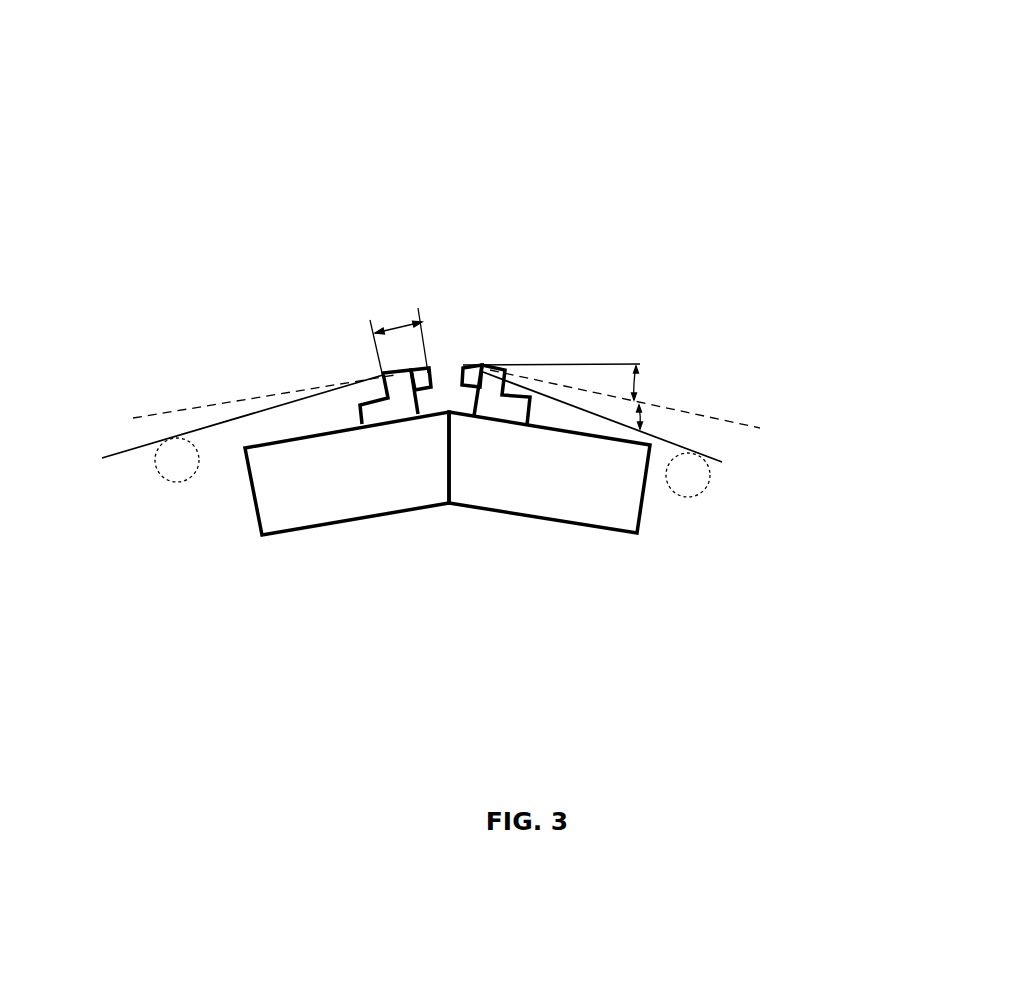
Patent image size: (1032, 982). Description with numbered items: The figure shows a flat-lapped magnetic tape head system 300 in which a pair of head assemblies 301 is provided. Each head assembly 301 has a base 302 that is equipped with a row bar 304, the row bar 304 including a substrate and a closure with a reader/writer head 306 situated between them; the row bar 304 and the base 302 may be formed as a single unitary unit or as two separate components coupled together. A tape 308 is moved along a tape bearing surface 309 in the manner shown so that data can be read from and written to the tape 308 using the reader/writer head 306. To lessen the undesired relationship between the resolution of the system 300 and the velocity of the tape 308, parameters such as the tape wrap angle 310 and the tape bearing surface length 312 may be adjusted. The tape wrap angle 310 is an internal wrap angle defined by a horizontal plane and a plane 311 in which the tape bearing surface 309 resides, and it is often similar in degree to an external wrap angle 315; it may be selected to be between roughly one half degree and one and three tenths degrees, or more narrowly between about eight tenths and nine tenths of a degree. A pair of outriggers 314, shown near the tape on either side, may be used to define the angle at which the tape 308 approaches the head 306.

The flat-lapped magnetic tape head system 300 is at (720, 175).
The head assembly 301 is at (262, 347).
The base 302 is at (253, 500).
The row bar 304 is at (493, 405).
The reader/writer head 306 is at (420, 398).
The tape 308 is at (722, 466).
The tape bearing surface 309 is at (500, 375).
The tape wrap angle 310 is at (648, 370).
The plane 311 is at (750, 427).
The tape bearing surface length 312 is at (393, 322).
The outrigger 314 is at (170, 480).
The external wrap angle 315 is at (640, 428).